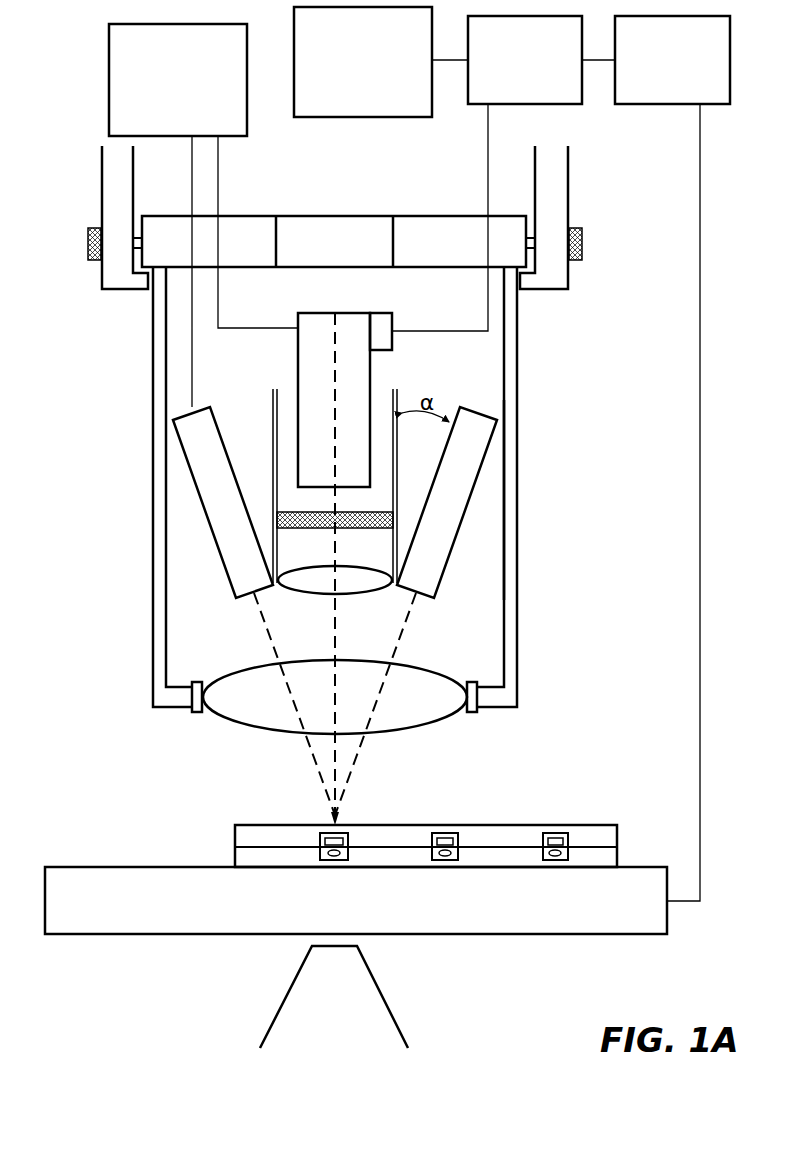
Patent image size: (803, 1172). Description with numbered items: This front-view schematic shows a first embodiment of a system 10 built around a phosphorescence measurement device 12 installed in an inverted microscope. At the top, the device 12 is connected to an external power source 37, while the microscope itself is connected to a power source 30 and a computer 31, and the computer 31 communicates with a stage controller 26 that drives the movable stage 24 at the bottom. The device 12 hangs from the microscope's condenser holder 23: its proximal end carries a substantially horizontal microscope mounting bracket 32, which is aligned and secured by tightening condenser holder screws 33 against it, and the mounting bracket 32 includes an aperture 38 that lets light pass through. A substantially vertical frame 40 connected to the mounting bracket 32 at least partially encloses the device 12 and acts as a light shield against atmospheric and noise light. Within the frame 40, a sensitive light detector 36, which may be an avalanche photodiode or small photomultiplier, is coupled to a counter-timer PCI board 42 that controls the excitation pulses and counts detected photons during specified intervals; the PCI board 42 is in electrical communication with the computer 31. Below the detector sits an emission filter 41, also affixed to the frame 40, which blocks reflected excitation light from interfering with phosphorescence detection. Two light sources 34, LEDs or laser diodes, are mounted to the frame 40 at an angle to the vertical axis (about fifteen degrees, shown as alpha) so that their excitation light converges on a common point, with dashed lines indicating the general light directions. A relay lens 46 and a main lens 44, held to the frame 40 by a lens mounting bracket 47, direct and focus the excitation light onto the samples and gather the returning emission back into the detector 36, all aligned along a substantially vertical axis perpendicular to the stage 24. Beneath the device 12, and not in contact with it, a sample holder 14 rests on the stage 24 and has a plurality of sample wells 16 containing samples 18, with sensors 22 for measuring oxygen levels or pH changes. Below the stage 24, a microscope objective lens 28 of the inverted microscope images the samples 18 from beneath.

The system 10 is at (58, 23).
The external power source 37 is at (167, 128).
The power source 30 is at (352, 108).
The computer 31 is at (514, 97).
The stage controller 26 is at (661, 96).
The condenser holder 23 is at (113, 198).
The condenser holder screws 33 is at (88, 243).
The microscope mounting bracket 32 is at (241, 236).
The aperture 38 is at (335, 240).
The phosphorescence measurement device 12 is at (178, 336).
The frame 40 is at (485, 582).
The sensitive light detector 36 is at (324, 360).
The counter-timer PCI board 42 is at (385, 323).
The emission filter 41 is at (297, 517).
The light sources 34 is at (212, 520).
The relay lens 46 is at (300, 598).
The main lens 44 is at (250, 727).
The lens mounting bracket 47 is at (473, 712).
The sample holder 14 is at (235, 830).
The stage 24 is at (69, 917).
The sensors 22 is at (440, 842).
The sample wells 16 is at (543, 842).
The samples 18 is at (445, 856).
The microscope objective lenses 28 is at (313, 1033).